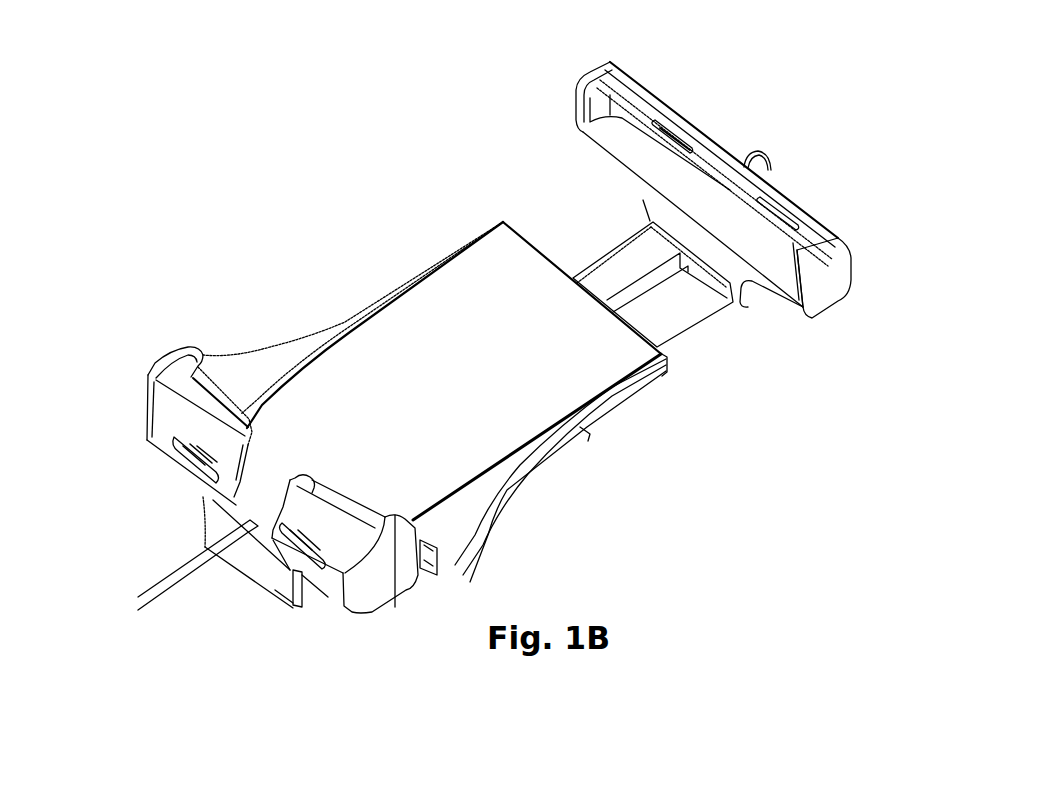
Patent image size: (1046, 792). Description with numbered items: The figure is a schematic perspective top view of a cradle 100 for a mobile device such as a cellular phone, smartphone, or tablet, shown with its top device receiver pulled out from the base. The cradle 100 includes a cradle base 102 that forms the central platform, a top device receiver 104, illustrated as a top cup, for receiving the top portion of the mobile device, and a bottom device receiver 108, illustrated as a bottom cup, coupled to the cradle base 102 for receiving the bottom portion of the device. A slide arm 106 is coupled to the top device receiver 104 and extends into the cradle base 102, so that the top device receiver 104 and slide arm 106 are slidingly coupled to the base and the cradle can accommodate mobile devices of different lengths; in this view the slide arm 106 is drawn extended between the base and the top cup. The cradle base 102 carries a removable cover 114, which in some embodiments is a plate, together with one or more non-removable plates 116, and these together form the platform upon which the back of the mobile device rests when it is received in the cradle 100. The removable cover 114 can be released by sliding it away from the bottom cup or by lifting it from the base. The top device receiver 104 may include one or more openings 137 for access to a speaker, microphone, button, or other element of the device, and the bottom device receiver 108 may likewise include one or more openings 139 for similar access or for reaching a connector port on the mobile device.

The cradle 100 is at (286, 176).
The cradle base 102 is at (480, 528).
The top device receiver 104 is at (843, 303).
The slide arm 106 is at (699, 326).
The bottom device receiver 108 is at (177, 365).
The removable cover 114 is at (476, 380).
The non-removable plates 116 is at (253, 370).
The openings 137 is at (678, 138).
The openings 139 is at (195, 461).